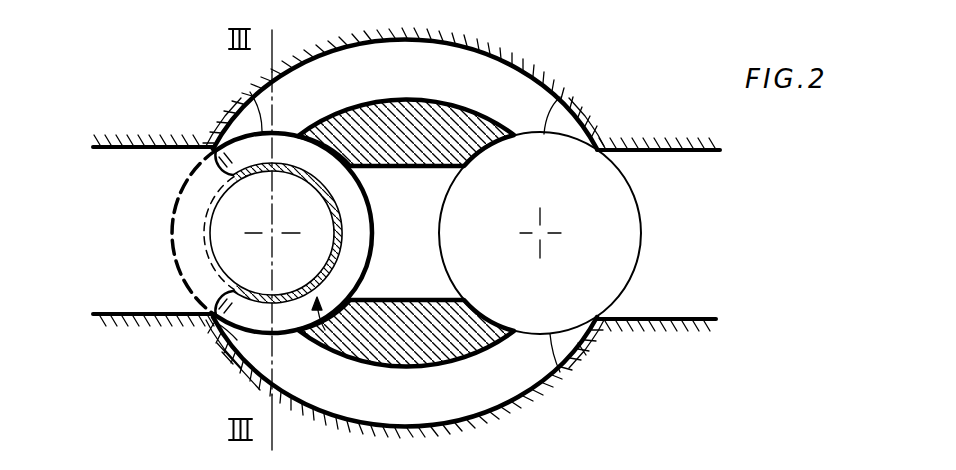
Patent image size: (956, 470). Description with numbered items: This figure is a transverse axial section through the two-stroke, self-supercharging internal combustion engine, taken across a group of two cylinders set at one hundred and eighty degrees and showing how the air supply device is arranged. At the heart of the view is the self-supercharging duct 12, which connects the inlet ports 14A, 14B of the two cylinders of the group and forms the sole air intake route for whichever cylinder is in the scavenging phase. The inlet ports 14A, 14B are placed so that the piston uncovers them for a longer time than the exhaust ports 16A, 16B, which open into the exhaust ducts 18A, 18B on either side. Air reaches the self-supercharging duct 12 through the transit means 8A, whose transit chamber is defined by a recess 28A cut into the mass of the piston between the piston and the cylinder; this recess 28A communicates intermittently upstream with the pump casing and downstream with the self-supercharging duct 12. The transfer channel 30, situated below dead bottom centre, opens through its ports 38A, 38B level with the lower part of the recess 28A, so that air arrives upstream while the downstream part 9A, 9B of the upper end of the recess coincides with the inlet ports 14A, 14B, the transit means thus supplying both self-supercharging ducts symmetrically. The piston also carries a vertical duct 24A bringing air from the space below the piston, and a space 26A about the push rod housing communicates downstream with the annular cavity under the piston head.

The transit means 8A is at (327, 332).
The downstream part of the upper end of the recess 9A is at (248, 92).
The downstream part of the upper end of the recess 9B is at (566, 92).
The self-supercharging duct 12 is at (532, 76).
The inlet port 14A is at (228, 118).
The inlet port 14B is at (584, 114).
The exhaust port 16A is at (196, 170).
The exhaust port 16B is at (640, 208).
The exhaust duct 18A is at (105, 181).
The exhaust duct 18B is at (692, 232).
The vertical duct 24A is at (190, 256).
The space about the housing of the push rod or piston rod 26A is at (223, 229).
The recess 28A is at (296, 317).
The transfer channel 30 is at (412, 172).
The port of the transfer channel 38A is at (362, 273).
The port of the transfer channel 38B is at (436, 223).